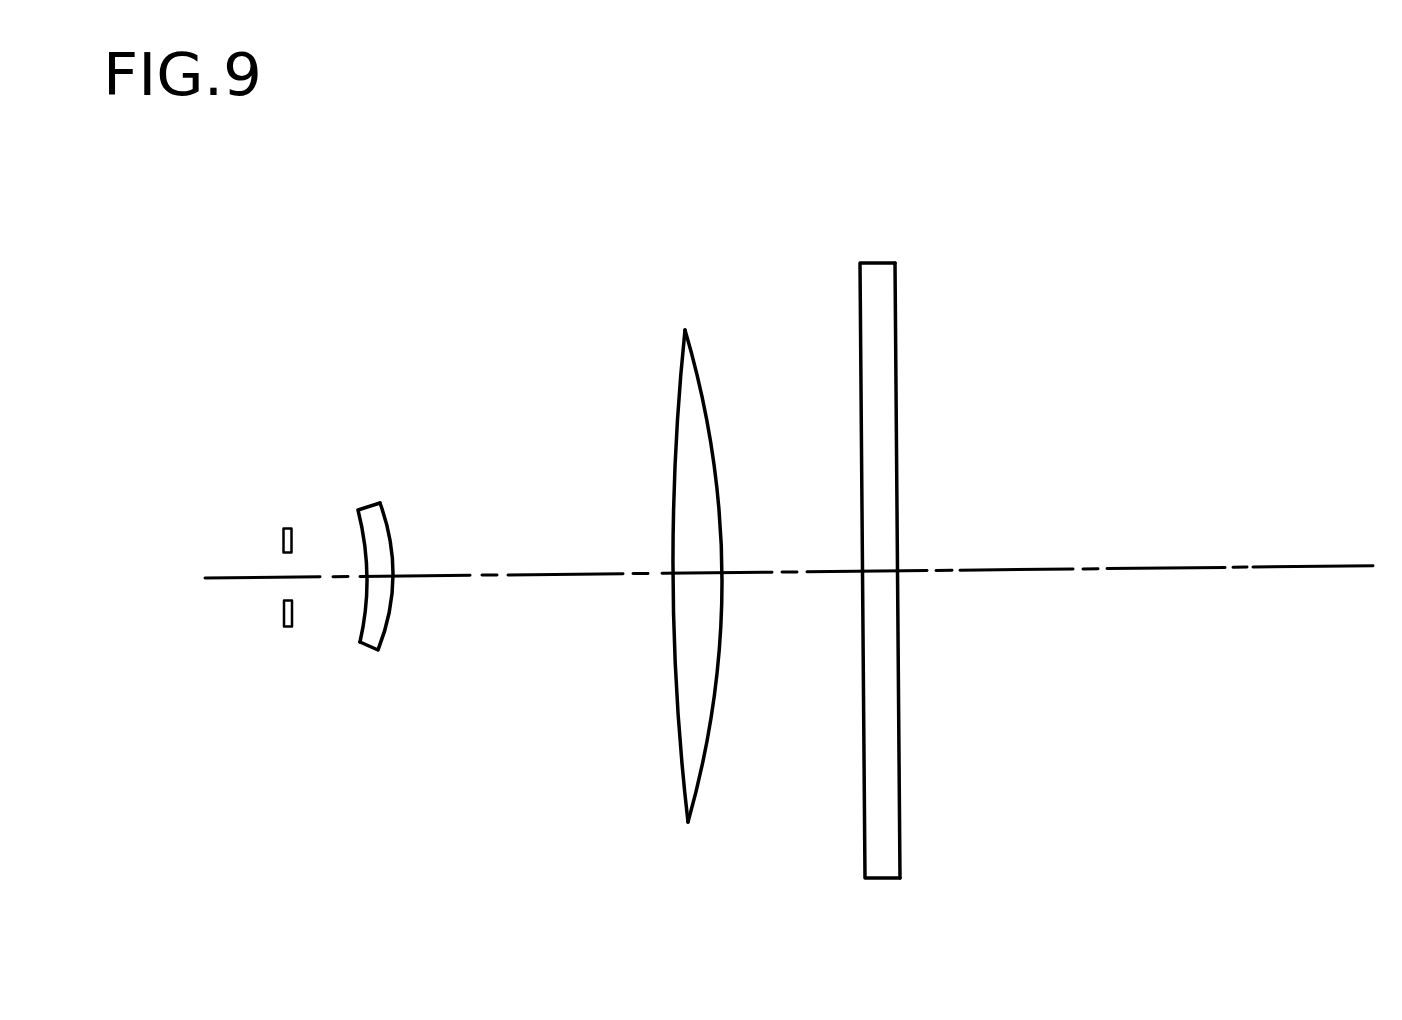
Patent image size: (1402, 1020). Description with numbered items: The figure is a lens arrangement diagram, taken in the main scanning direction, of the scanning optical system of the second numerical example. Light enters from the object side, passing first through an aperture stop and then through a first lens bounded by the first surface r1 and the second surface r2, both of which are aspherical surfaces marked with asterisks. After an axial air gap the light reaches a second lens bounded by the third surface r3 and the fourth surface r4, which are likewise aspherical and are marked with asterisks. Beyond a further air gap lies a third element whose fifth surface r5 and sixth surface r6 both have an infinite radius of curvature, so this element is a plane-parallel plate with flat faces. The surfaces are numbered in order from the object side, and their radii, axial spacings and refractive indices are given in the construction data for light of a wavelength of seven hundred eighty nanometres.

The first surface r1 is at (395, 444).
The second surface r2 is at (395, 535).
The third surface r3 is at (675, 400).
The fourth surface r4 is at (843, 330).
The fifth surface r5 is at (858, 287).
The sixth surface r6 is at (895, 325).